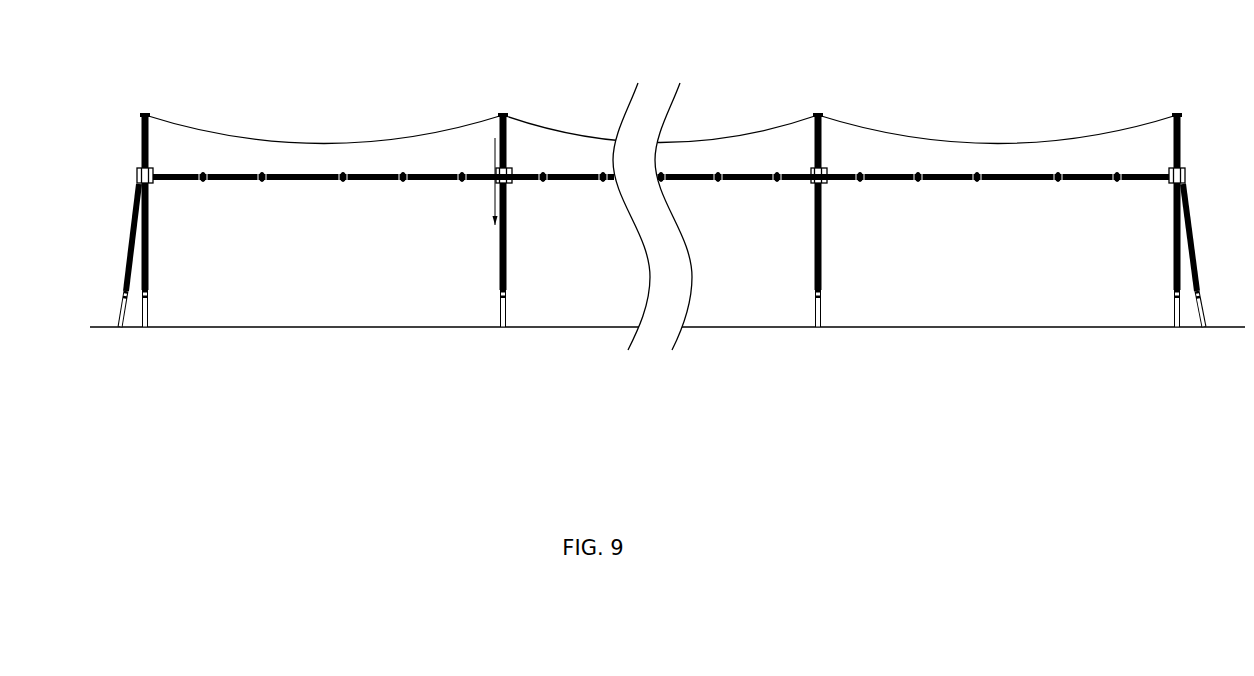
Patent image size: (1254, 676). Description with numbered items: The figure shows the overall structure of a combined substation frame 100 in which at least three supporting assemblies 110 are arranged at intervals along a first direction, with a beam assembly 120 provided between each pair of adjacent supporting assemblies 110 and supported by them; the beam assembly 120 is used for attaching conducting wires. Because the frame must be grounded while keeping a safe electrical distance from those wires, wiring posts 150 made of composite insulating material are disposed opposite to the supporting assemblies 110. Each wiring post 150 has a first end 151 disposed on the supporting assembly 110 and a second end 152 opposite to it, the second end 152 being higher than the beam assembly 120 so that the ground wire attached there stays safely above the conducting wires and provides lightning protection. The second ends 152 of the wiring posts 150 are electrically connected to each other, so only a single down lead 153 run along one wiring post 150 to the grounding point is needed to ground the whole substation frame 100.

The substation frame 100 is at (667, 191).
The supporting assembly 110 is at (836, 236).
The beam assembly 120 is at (294, 187).
The wiring post 150 is at (146, 152).
The first end 151 is at (516, 167).
The second end 152 is at (503, 110).
The down lead 153 is at (496, 164).